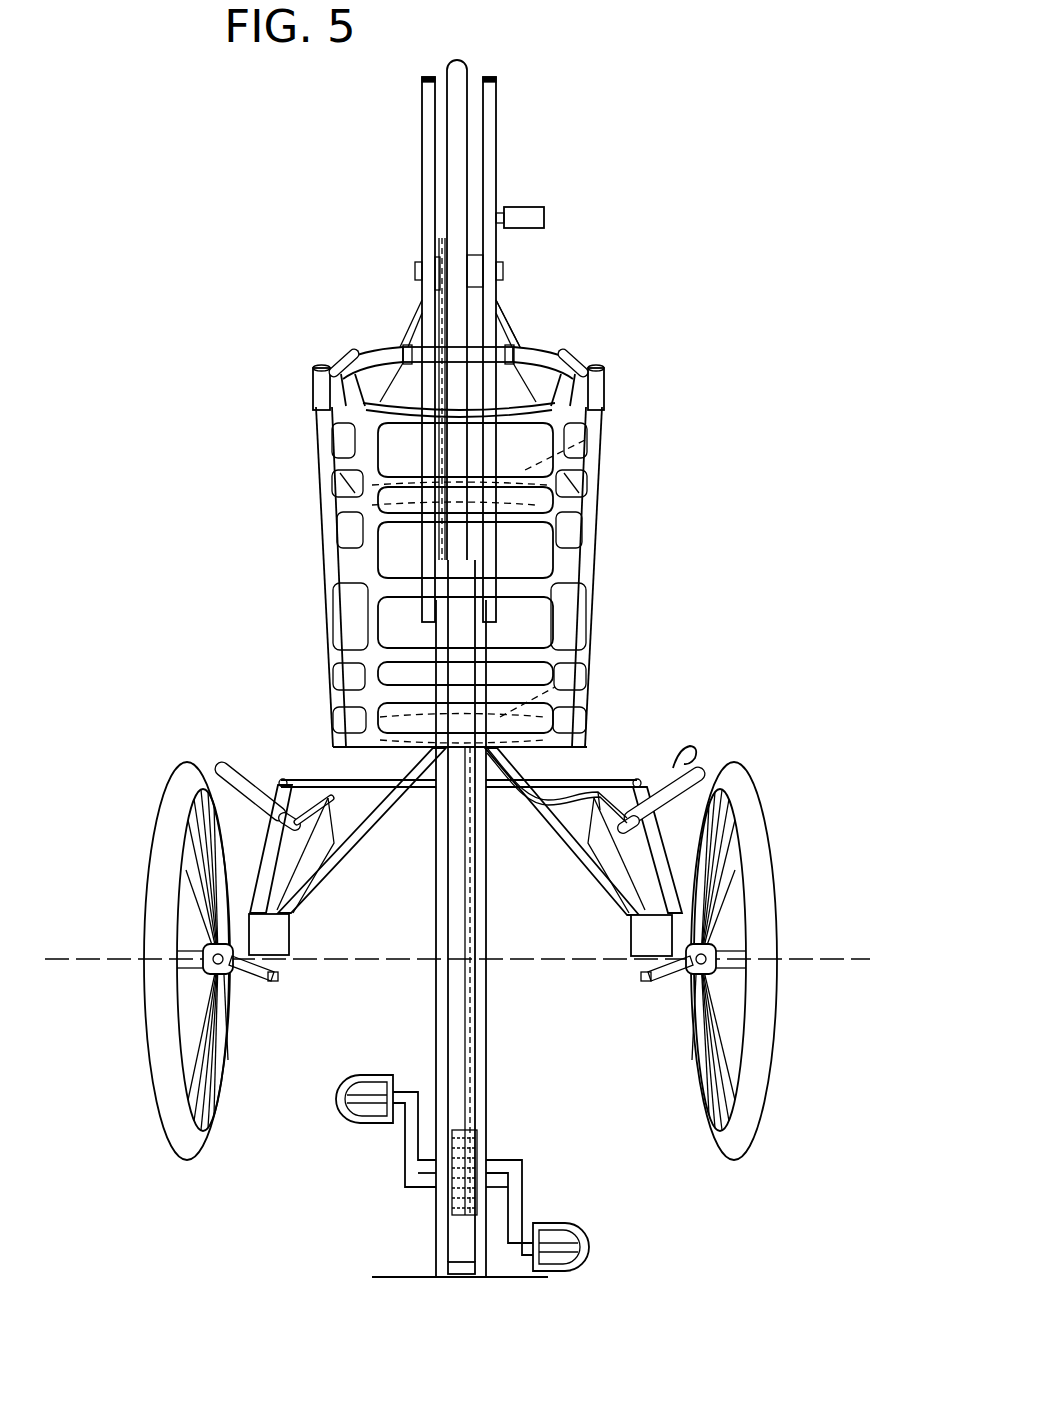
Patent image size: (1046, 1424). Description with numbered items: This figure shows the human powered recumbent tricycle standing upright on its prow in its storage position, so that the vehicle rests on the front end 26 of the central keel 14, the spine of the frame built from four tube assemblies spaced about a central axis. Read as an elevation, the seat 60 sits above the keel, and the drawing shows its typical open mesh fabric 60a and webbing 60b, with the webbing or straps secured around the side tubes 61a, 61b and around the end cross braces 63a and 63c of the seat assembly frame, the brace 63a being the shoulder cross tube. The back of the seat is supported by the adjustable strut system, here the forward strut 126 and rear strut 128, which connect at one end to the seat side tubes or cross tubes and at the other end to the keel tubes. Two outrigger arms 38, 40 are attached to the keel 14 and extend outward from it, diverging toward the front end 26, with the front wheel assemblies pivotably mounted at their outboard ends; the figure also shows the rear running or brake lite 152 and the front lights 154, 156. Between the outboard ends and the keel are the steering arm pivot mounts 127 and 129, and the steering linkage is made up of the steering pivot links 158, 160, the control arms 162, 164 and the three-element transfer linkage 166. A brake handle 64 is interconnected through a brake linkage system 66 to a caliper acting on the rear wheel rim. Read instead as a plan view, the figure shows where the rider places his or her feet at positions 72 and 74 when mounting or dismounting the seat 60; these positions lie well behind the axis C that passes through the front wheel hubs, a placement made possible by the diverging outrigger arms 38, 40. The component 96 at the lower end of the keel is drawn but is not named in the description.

The central keel 14 is at (496, 1140).
The front end 26 is at (414, 1242).
The outrigger arm 38 is at (326, 876).
The outrigger arm 40 is at (603, 898).
The seat 60 is at (447, 577).
The open mesh fabric 60a is at (390, 553).
The webbing 60b is at (378, 598).
The side tube 61a is at (605, 383).
The side tube 61b is at (318, 393).
The shoulder cross tube 63a is at (547, 352).
The end cross brace 63c is at (562, 678).
The brake handle 64 is at (674, 745).
The brake linkage system 66 is at (585, 797).
The foot position 72 is at (548, 881).
The foot position 74 is at (402, 883).
The frame lower end 96 is at (460, 1274).
The forward strut 126 is at (569, 352).
The steering arm pivot mount 127 is at (313, 779).
The rear strut 128 is at (503, 330).
The steering arm pivot mount 129 is at (585, 800).
The rear running or brake lite 152 is at (546, 207).
The front light 154 is at (260, 932).
The front light 156 is at (664, 930).
The steering pivot link 158 is at (290, 918).
The steering pivot link 160 is at (622, 905).
The control arm 162 is at (260, 982).
The control arm 164 is at (668, 971).
The transfer linkage 166 is at (262, 855).
The axis C is at (404, 962).